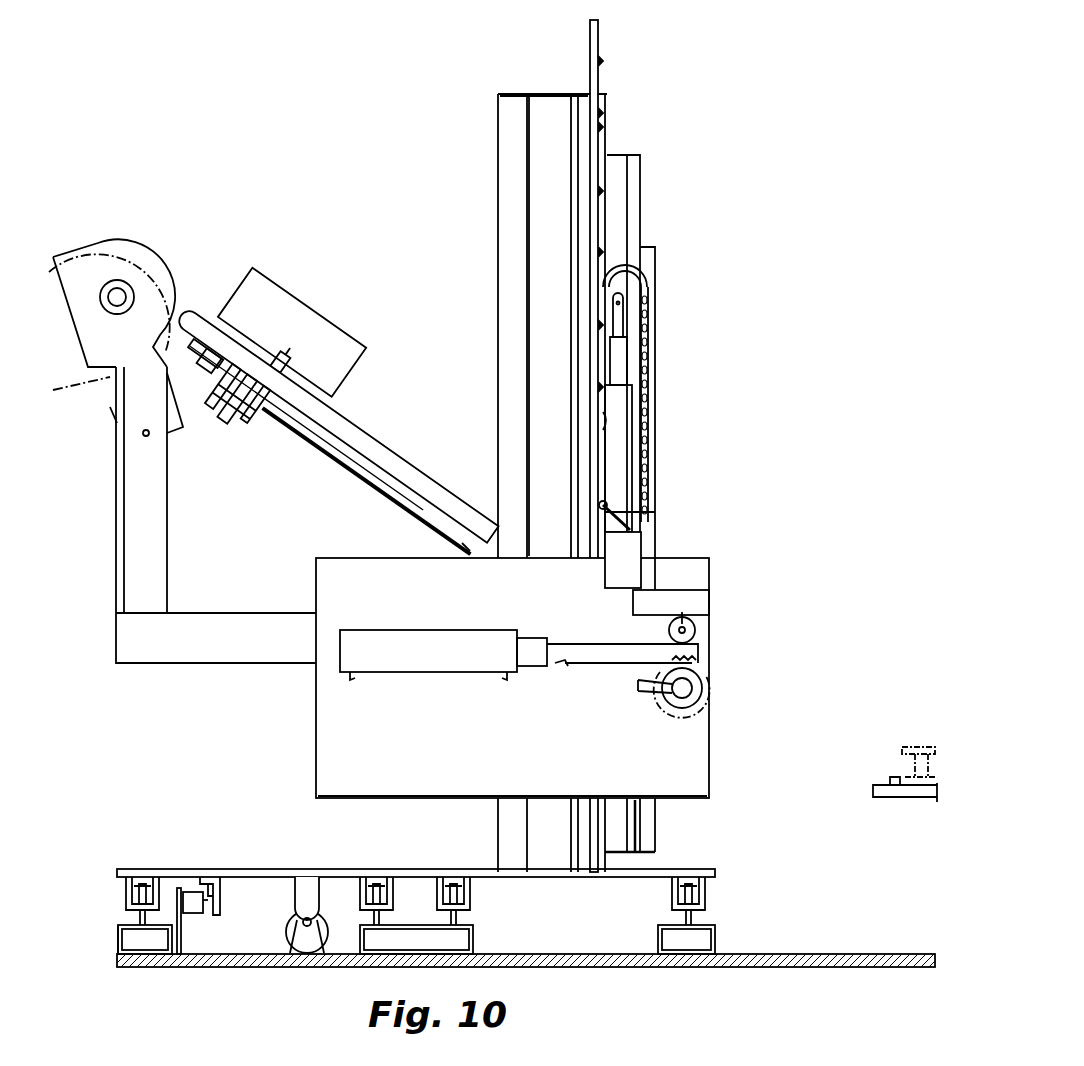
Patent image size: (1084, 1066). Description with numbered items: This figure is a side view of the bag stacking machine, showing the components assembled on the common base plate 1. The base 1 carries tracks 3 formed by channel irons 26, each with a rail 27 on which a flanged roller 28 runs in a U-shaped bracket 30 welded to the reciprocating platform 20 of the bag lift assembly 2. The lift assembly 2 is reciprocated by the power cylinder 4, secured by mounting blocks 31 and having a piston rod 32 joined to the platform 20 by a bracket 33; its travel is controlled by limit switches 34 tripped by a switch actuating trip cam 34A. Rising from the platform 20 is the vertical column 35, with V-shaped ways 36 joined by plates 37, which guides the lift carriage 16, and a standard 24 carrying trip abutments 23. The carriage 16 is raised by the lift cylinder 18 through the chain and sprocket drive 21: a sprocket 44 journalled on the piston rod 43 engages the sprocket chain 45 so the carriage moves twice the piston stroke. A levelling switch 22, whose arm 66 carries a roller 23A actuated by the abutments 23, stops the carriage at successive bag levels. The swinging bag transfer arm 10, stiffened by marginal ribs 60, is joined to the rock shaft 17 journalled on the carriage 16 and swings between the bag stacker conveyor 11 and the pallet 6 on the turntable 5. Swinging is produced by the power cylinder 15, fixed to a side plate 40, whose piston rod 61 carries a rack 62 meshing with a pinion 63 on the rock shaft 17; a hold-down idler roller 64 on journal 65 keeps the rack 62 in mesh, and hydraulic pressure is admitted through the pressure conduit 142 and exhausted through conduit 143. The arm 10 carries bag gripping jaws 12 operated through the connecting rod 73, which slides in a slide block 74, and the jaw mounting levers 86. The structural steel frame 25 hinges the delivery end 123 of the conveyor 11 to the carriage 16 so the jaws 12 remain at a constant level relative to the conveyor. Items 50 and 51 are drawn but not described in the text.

The base plate 1 is at (826, 950).
The bag lift assembly 2 is at (476, 308).
The tracks 3 is at (100, 945).
The power cylinder 4 is at (303, 948).
The rotary turntable 5 is at (886, 788).
The pallet 6 is at (915, 746).
The swinging bag transfer arm 10 is at (420, 464).
The bag stacker conveyor 11 is at (121, 222).
The bag gripping jaws 12 is at (368, 362).
The power cylinder 15 is at (428, 651).
The lift carriage 16 is at (338, 736).
The rock shaft 17 is at (704, 688).
The lift cylinder 18 is at (620, 460).
The reciprocating platform 20 is at (290, 872).
The chain and sprocket drive 21 is at (655, 292).
The levelling switch 22 is at (640, 540).
The trip abutments 23 is at (603, 425).
The roller 23A is at (626, 500).
The standard 24 is at (600, 46).
The structural steel frame 25 is at (172, 530).
The channel irons 26 is at (716, 942).
The rail 27 is at (416, 940).
The flanged roller 28 is at (694, 877).
The U-shaped brackets 30 is at (708, 888).
The mounting blocks 31 is at (286, 946).
The piston rod 32 is at (300, 921).
The bracket 33 is at (306, 882).
The limit switches 34 is at (196, 914).
The switch actuating trip cam 34A is at (216, 906).
The vertical column 35 is at (553, 112).
The V-shaped ways 36 is at (512, 150).
The plates 37 is at (553, 326).
The side plates 40 is at (512, 751).
The piston rod 43 is at (624, 362).
The sprocket 44 is at (634, 288).
The sprocket chain 45 is at (648, 318).
The guide housing 50 is at (636, 226).
The guide foot 51 is at (656, 829).
The marginal ribs 60 is at (436, 525).
The piston rod 61 is at (530, 636).
The rack 62 is at (624, 656).
The pinion 63 is at (712, 660).
The hold-down idler roller 64 is at (696, 627).
The journal 65 is at (671, 604).
The arm 66 is at (642, 513).
The connecting rod 73 is at (306, 430).
The slide block 74 is at (198, 373).
The jaw mounting levers 86 is at (283, 352).
The delivery end 123 is at (176, 214).
The pressure conduit 142 is at (358, 677).
The conduit 143 is at (500, 680).